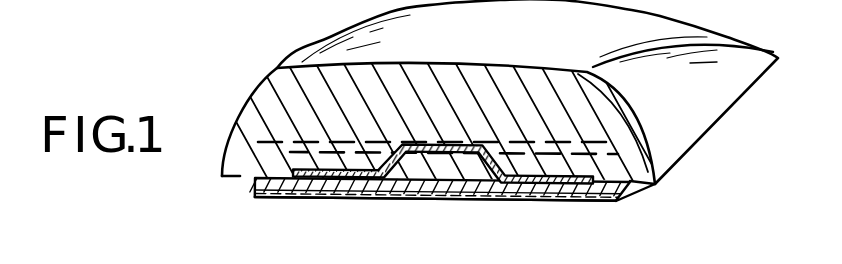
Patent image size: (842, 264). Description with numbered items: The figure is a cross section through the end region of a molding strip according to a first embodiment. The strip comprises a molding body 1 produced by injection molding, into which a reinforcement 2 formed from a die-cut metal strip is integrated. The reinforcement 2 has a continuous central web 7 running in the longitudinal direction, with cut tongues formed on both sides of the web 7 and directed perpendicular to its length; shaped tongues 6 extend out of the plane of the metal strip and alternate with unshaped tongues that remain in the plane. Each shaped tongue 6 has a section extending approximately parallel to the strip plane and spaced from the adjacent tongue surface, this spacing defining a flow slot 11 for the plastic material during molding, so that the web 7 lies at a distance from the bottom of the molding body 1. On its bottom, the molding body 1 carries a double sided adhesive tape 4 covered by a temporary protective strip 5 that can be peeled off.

The molding body 1 is at (287, 105).
The reinforcement 2 is at (363, 187).
The double sided adhesive tape 4 is at (508, 190).
The temporary protective strip 5 is at (420, 198).
The shaped tongues 6 is at (310, 193).
The central web 7 is at (447, 142).
The flow slot 11 is at (657, 191).